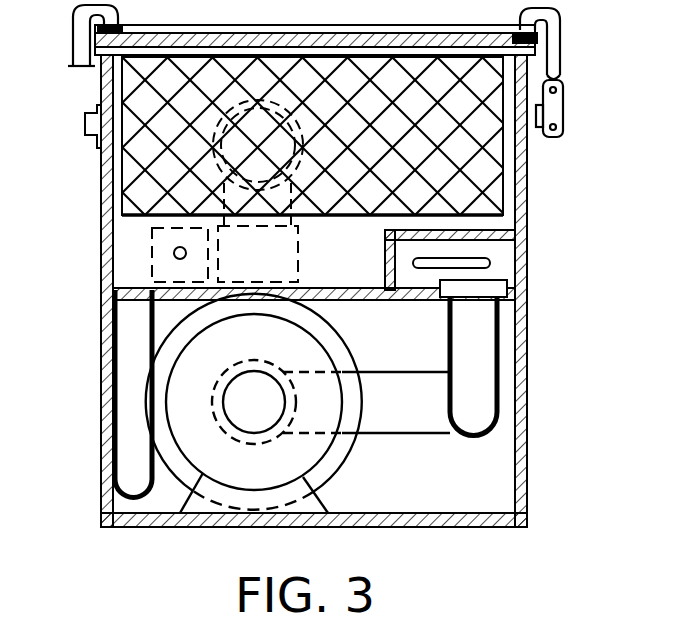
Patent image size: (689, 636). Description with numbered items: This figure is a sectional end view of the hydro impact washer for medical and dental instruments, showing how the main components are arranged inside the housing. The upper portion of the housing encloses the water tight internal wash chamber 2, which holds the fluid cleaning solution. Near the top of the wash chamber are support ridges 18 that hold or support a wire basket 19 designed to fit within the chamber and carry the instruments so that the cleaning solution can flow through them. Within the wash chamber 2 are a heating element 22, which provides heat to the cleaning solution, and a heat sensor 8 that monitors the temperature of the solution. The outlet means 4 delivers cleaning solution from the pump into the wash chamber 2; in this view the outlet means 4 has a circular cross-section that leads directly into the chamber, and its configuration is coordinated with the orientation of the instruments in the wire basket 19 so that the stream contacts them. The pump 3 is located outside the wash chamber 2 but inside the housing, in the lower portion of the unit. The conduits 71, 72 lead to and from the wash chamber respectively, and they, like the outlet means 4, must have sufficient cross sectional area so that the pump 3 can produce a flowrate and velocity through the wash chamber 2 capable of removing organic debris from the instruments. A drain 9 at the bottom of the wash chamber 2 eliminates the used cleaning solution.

The internal wash chamber 2 is at (351, 266).
The pump 3 is at (264, 348).
The outlet means 4 is at (270, 175).
The heat sensor 8 is at (175, 255).
The drain 9 is at (137, 332).
The support ridges 18 is at (112, 68).
The wire basket 19 is at (485, 160).
The heating element 22 is at (490, 263).
The conduit 71 is at (273, 266).
The conduit 72 is at (475, 494).